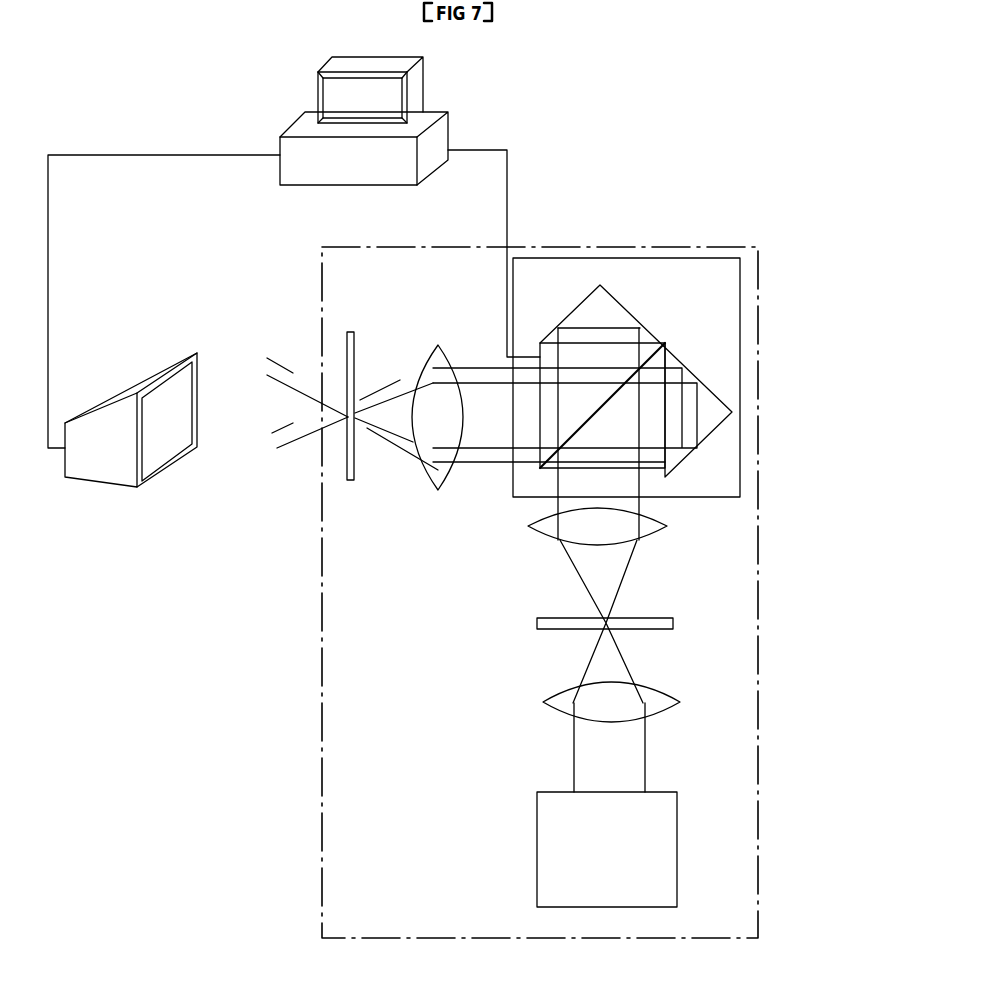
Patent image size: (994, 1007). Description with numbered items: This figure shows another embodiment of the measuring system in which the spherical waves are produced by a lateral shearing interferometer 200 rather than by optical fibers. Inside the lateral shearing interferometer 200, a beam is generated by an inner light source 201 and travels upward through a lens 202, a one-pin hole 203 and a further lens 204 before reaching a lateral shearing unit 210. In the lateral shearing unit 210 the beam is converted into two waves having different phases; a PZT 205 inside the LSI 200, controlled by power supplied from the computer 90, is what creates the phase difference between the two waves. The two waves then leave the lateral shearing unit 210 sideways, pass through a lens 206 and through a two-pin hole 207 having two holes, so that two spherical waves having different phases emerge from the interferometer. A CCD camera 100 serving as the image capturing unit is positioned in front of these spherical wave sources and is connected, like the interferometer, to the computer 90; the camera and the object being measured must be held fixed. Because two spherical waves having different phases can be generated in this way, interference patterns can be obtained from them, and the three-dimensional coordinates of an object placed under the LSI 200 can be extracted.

The computer 90 is at (390, 108).
The CCD camera 100 is at (153, 433).
The lateral shearing interferometer 200 is at (758, 375).
The inner light source 201 is at (658, 847).
The lens 202 is at (660, 698).
The one-pin hole 203 is at (663, 623).
The lens 204 is at (653, 525).
The PZT 205 is at (575, 402).
The lens 206 is at (437, 468).
The two-pin hole 207 is at (348, 360).
The lateral shearing unit 210 is at (698, 257).